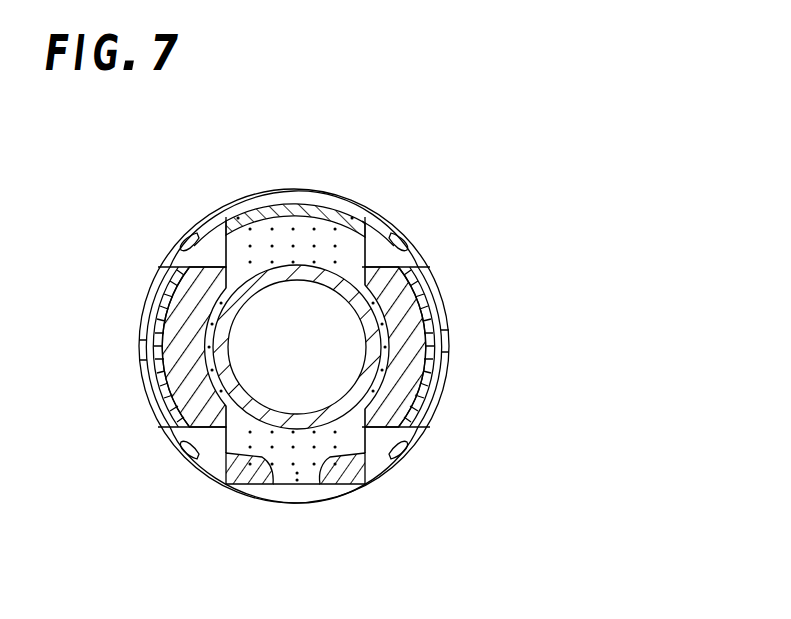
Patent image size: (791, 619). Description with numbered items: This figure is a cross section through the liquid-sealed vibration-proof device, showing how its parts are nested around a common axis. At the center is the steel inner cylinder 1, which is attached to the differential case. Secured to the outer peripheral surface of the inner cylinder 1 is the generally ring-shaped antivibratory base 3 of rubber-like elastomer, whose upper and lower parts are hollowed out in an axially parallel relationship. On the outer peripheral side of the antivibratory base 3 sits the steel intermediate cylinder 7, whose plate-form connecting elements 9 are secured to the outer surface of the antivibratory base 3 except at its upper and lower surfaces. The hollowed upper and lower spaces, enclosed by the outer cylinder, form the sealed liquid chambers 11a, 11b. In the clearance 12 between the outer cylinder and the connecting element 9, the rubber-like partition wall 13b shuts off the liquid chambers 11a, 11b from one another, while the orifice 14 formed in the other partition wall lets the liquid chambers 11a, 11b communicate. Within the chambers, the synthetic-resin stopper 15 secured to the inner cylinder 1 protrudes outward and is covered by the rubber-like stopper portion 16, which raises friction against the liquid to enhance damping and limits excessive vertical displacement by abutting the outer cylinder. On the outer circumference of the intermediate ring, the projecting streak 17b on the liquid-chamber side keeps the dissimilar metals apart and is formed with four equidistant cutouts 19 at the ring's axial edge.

The inner cylinder 1 is at (440, 295).
The antivibratory base 3 is at (447, 370).
The intermediate cylinder 7 is at (448, 410).
The connecting element 9 is at (432, 426).
The liquid chamber 11a is at (373, 233).
The liquid chamber 11b is at (377, 455).
The clearance 12 is at (450, 313).
The partition wall 13b is at (450, 343).
The orifice 14 is at (147, 347).
The stopper 15 is at (287, 222).
The stopper portion 16 is at (330, 217).
The projecting streak 17b is at (238, 488).
The cutout 19 is at (187, 457).